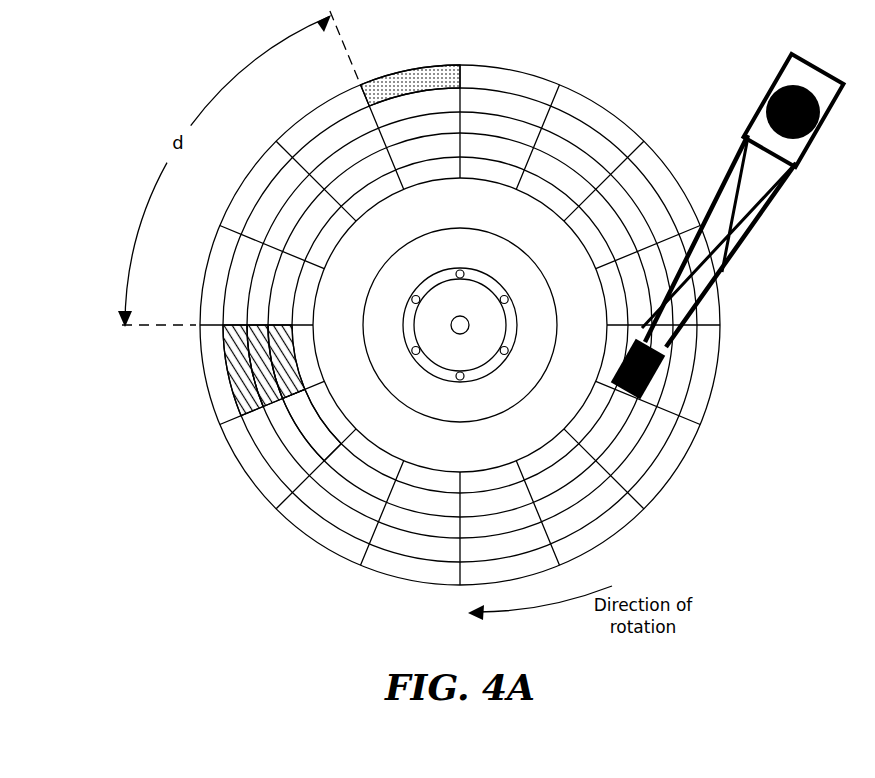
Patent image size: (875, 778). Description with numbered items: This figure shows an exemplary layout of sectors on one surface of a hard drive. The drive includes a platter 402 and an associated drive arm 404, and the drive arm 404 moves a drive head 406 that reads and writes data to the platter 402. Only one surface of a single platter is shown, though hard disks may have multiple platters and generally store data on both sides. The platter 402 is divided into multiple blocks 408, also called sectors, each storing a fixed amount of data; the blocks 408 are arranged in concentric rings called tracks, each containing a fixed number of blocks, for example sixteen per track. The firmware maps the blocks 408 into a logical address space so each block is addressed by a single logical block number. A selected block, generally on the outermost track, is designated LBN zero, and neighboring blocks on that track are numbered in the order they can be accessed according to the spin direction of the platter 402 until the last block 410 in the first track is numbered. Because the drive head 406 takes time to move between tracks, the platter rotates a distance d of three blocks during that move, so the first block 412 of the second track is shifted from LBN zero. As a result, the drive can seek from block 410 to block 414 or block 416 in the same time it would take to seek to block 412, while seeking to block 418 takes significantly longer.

The platter 402 is at (688, 464).
The drive arm 404 is at (773, 210).
The drive head 406 is at (659, 383).
The blocks 408 is at (212, 260).
The last block 410 is at (438, 66).
The first block 412 is at (242, 412).
The block 414 is at (273, 402).
The block 416 is at (293, 400).
The block 418 is at (320, 440).